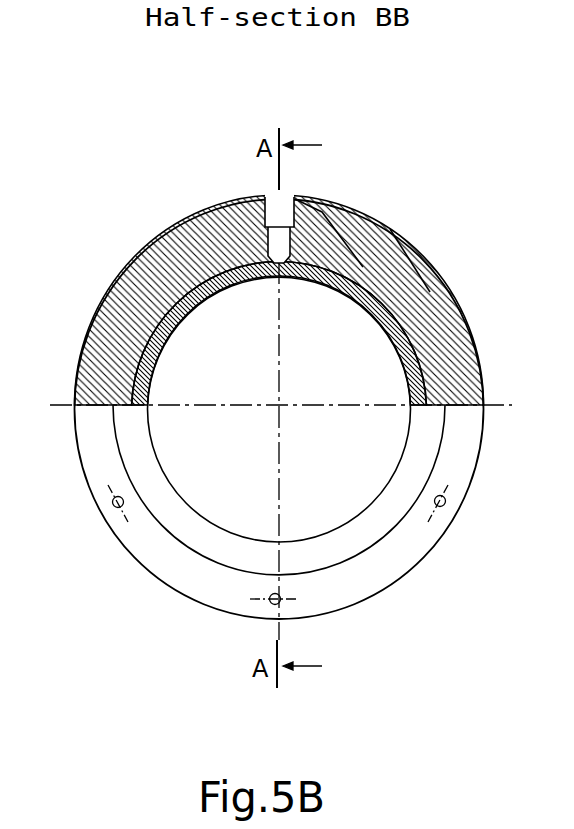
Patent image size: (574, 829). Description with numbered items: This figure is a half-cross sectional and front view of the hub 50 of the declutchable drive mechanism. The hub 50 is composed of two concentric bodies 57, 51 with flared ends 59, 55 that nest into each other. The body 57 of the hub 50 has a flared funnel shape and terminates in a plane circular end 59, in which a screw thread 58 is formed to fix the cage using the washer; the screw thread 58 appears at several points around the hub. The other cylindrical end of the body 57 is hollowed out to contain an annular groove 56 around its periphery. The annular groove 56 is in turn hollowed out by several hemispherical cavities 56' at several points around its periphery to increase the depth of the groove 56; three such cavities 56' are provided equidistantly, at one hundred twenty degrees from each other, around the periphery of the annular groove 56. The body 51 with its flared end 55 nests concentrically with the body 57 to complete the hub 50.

The hub 50 is at (178, 172).
The body 51 is at (170, 245).
The flared end 55 is at (282, 198).
The hemispherical cavity 56' is at (370, 217).
The annular groove 56 is at (433, 247).
The body 57 is at (443, 437).
The screw thread 58 is at (114, 507).
The plane circular end 59 is at (460, 462).